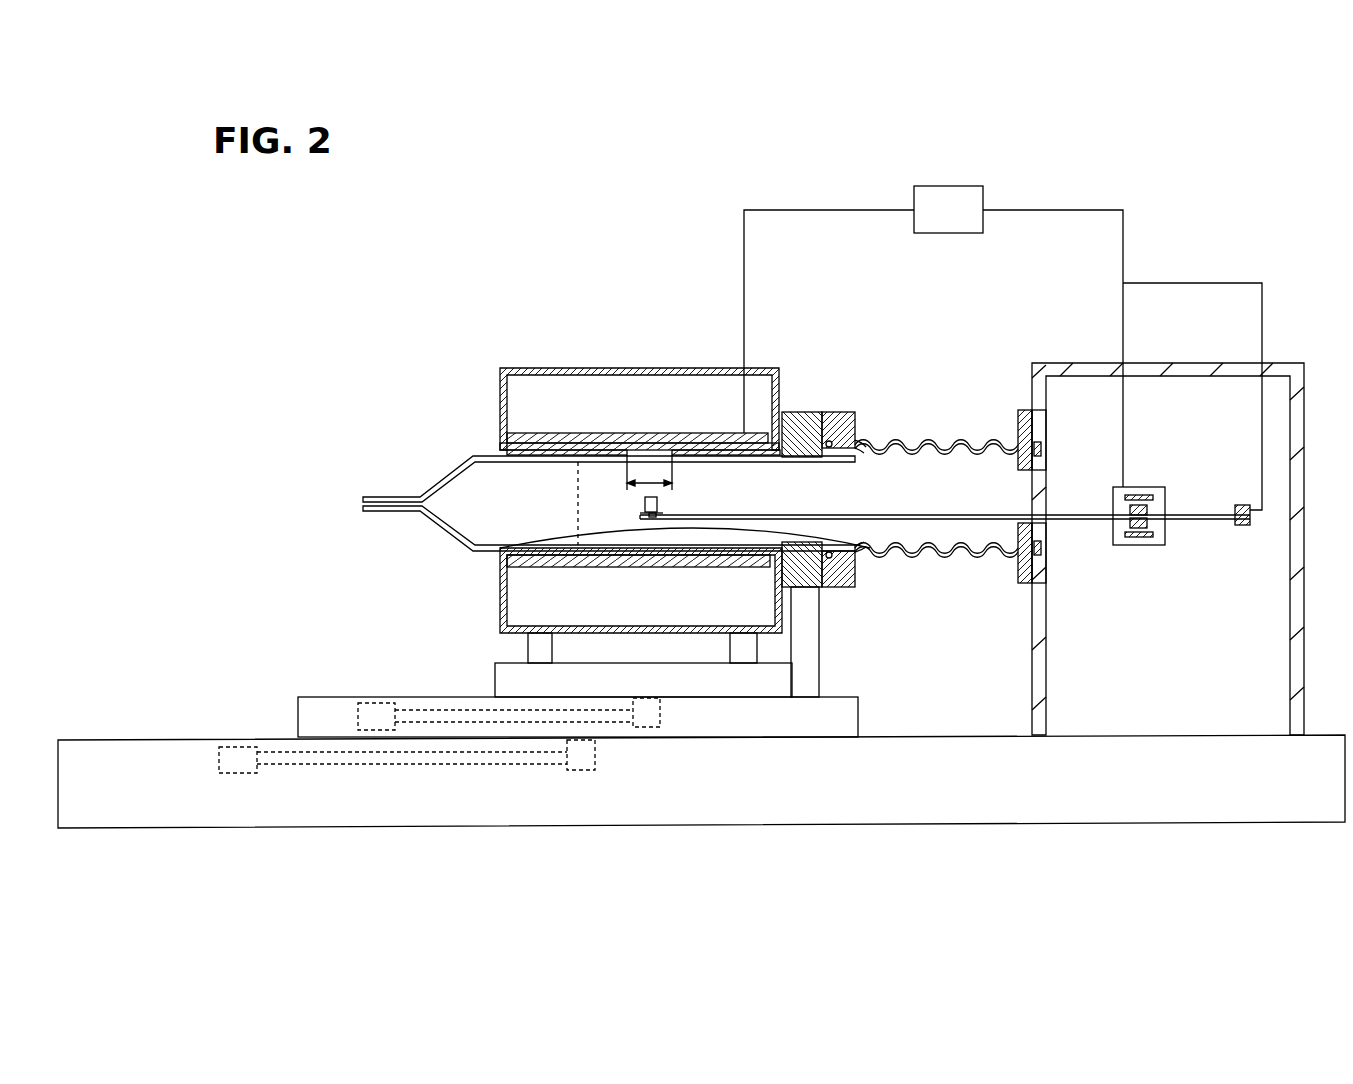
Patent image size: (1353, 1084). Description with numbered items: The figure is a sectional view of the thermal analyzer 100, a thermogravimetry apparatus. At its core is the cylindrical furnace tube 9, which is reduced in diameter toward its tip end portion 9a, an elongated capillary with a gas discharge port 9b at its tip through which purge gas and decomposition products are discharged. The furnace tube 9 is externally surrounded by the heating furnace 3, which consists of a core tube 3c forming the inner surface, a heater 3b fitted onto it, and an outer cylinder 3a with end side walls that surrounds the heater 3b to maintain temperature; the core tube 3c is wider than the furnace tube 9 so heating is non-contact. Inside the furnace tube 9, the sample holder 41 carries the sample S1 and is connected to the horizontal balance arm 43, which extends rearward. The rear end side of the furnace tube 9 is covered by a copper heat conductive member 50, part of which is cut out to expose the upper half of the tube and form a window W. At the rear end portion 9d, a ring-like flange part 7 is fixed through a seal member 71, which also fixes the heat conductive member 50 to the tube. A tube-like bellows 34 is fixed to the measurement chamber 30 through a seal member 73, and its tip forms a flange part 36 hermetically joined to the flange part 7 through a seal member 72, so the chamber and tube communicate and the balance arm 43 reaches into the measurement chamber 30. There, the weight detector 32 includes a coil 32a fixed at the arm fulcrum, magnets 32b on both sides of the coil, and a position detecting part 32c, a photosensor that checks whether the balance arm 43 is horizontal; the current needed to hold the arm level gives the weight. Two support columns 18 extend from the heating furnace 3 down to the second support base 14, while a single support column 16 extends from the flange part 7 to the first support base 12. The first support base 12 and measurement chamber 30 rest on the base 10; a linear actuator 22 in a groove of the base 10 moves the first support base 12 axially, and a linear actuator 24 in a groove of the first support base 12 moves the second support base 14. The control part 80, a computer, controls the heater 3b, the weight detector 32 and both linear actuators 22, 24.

The thermal analyzer 100 is at (1228, 229).
The control part 80 is at (955, 186).
The measurement chamber 30 is at (1187, 363).
The heating furnace 3 is at (640, 418).
The outer cylinder 3a is at (643, 433).
The heater 3b is at (700, 442).
The core tube 3c is at (722, 448).
The heat conductive member 50 is at (600, 433).
The flange part 7 is at (828, 447).
The seal member 71 is at (790, 412).
The seal member 72 is at (828, 412).
The flange part 36 is at (852, 412).
The bellows 34 is at (898, 440).
The seal member 73 is at (1042, 448).
The furnace tube 9 is at (589, 543).
The tip end portion 9a is at (392, 506).
The gas discharge port 9b is at (352, 508).
The rear end portion 9d is at (503, 558).
The sample holder 41 is at (660, 506).
The balance arm 43 is at (845, 515).
The weight detector 32 is at (1198, 567).
The coil 32a is at (1148, 525).
The magnet 32b is at (1140, 537).
The position detecting part 32c is at (1259, 557).
The support column 18 is at (742, 657).
The support column 16 is at (810, 629).
The second support base 14 is at (778, 680).
The first support base 12 is at (858, 718).
The base 10 is at (1033, 812).
The linear actuator 22 is at (268, 748).
The linear actuator 24 is at (445, 710).
The window W is at (649, 472).
The sample S1 is at (645, 505).